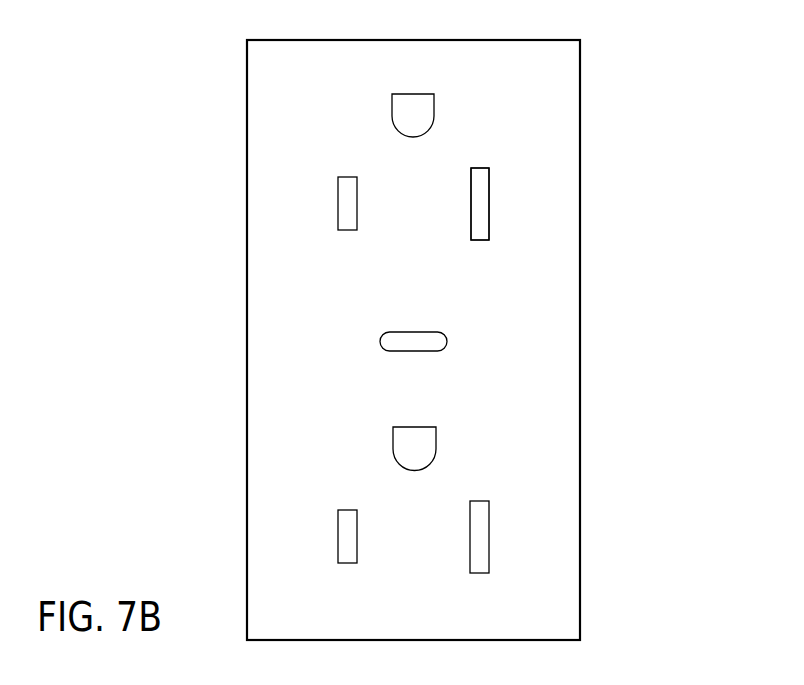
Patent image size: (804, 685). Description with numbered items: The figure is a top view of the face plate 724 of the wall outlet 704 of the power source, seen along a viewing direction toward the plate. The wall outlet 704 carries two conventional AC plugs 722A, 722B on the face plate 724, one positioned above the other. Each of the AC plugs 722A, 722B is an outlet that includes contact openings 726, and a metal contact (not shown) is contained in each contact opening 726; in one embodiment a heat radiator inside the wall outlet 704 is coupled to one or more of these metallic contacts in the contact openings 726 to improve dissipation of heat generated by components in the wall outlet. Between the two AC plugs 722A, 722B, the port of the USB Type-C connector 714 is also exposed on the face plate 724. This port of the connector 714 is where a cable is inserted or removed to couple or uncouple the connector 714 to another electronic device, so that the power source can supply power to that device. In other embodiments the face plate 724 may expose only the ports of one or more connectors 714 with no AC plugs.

The wall outlet 704 is at (235, 82).
The face plate 724 is at (275, 353).
The AC plug 722A is at (469, 128).
The AC plug 722B is at (467, 463).
The contact openings 726 is at (490, 201).
The USB Type-C connector 714 is at (447, 337).